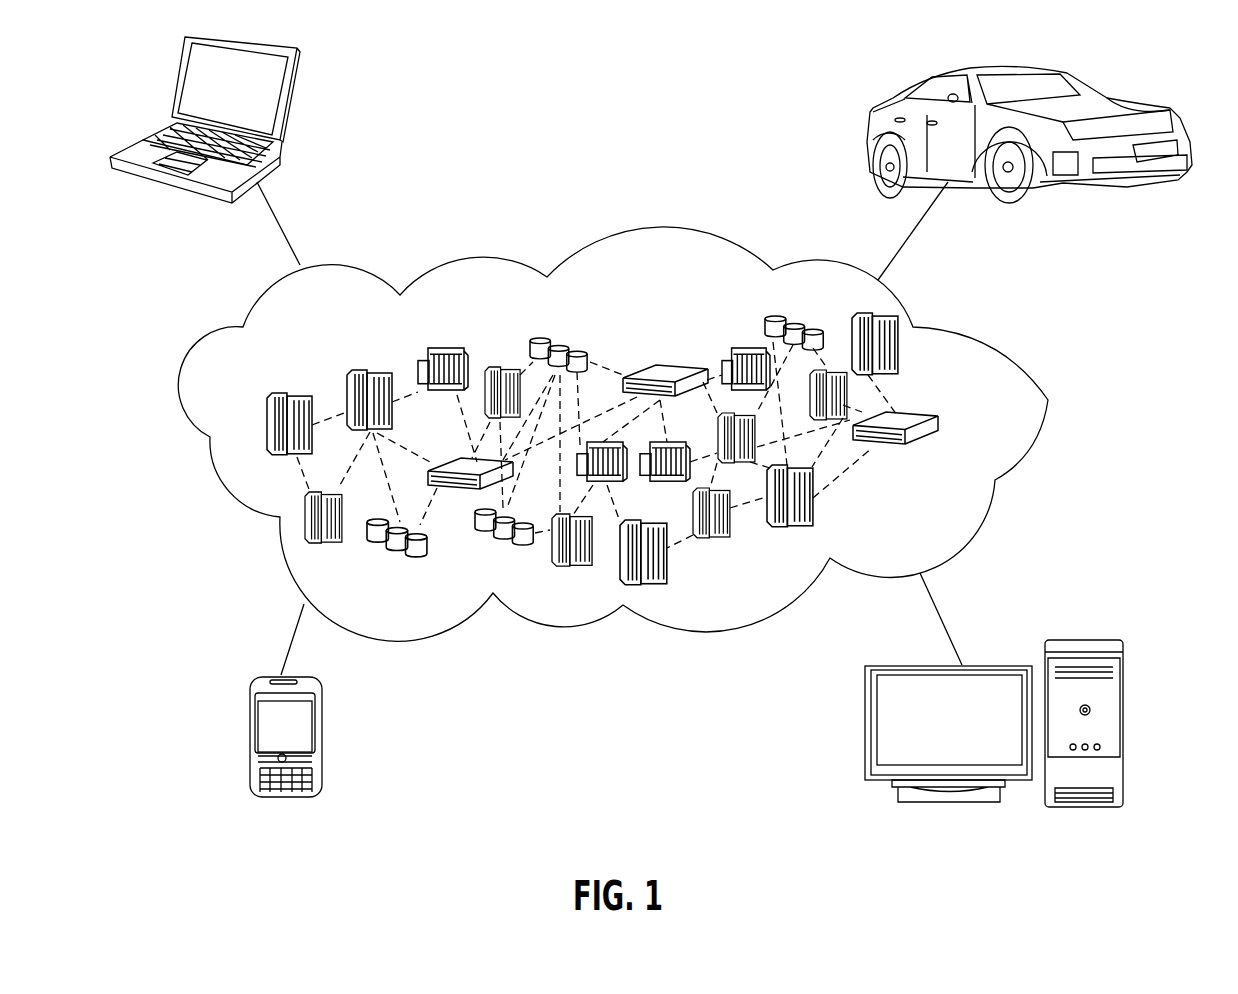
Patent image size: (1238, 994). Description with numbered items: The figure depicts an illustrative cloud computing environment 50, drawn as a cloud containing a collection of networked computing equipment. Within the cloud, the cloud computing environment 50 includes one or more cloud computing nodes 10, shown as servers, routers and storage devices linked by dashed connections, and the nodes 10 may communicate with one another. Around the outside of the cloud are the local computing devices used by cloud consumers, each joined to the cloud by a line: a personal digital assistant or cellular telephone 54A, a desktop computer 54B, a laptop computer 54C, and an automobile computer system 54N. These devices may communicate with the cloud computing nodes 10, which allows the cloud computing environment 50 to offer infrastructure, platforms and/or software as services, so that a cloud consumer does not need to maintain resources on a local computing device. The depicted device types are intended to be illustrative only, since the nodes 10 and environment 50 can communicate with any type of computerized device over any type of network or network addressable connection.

The cloud computing nodes 10 is at (980, 425).
The cloud computing environment 50 is at (1003, 340).
The personal digital assistant (PDA) or cellular telephone 54A is at (250, 742).
The desktop computer 54B is at (1085, 640).
The laptop computer 54C is at (292, 103).
The automobile computer system 54N is at (873, 113).